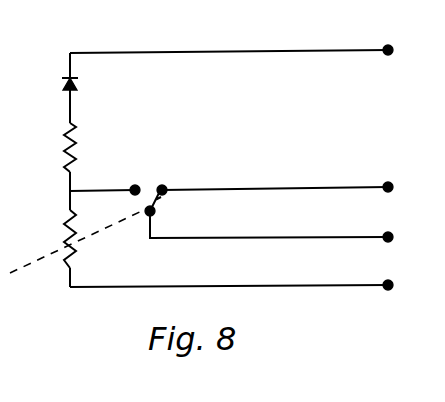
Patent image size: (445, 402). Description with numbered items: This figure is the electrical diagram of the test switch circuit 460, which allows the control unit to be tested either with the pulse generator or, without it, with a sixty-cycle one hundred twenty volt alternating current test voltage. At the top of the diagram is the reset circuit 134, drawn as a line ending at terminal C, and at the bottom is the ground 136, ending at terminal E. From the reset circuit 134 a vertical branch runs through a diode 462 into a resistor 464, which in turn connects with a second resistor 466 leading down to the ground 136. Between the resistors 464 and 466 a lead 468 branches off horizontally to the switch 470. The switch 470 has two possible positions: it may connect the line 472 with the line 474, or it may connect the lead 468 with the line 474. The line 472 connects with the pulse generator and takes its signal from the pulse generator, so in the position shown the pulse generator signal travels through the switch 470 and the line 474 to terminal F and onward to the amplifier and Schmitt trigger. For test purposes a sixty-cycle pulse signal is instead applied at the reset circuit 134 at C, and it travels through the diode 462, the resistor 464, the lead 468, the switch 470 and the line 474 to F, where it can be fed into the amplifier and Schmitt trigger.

The reset circuit 134 is at (266, 49).
The ground 136 is at (304, 289).
The test switch circuit 460 is at (69, 296).
The diode 462 is at (79, 82).
The resistor 464 is at (80, 131).
The resistor 466 is at (72, 243).
The lead 468 is at (104, 190).
The switch 470 is at (156, 206).
The line 472 is at (262, 188).
The line 474 is at (266, 238).